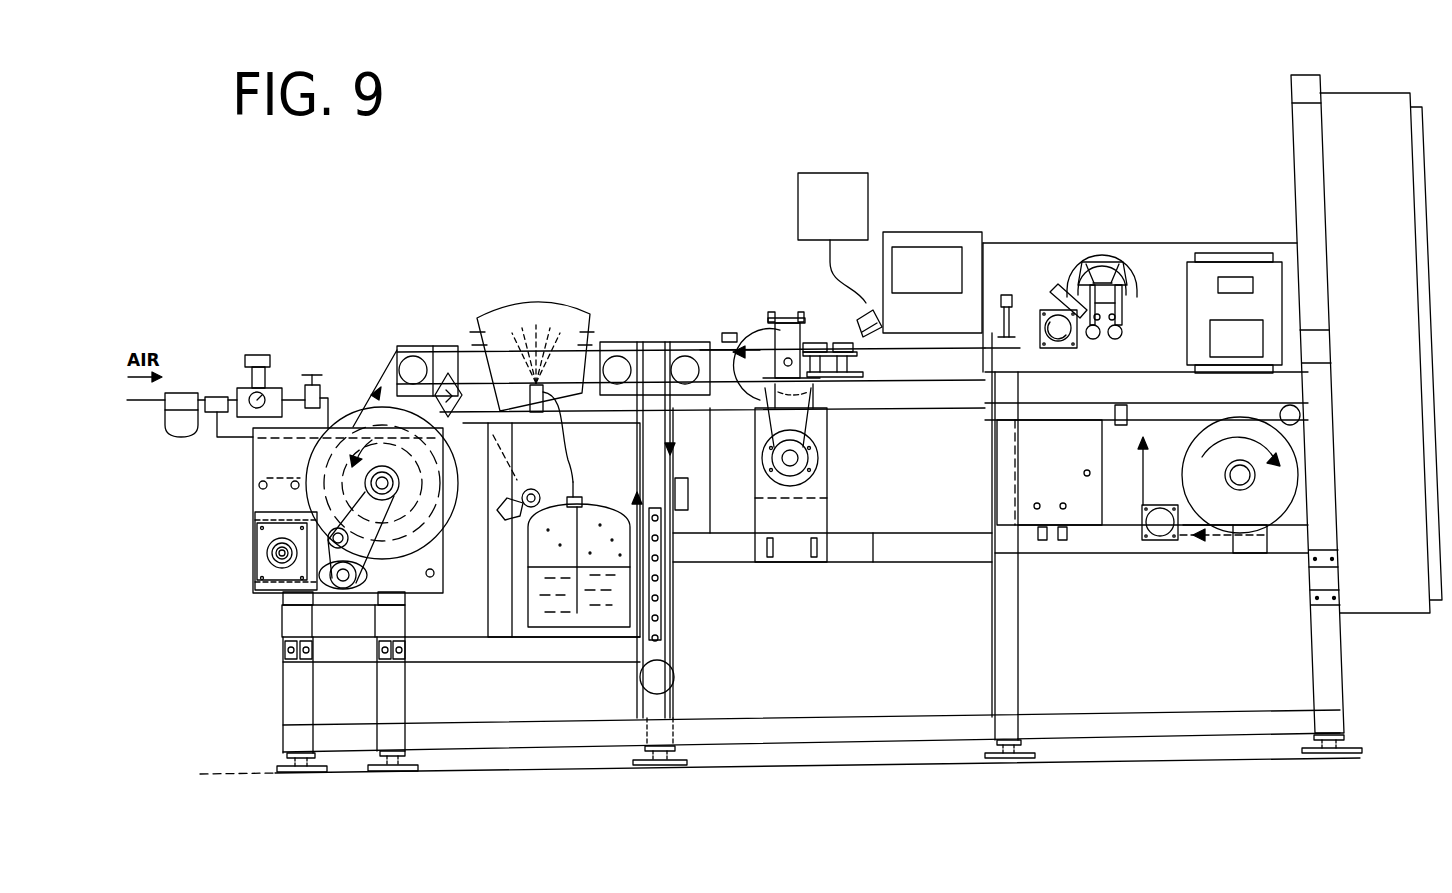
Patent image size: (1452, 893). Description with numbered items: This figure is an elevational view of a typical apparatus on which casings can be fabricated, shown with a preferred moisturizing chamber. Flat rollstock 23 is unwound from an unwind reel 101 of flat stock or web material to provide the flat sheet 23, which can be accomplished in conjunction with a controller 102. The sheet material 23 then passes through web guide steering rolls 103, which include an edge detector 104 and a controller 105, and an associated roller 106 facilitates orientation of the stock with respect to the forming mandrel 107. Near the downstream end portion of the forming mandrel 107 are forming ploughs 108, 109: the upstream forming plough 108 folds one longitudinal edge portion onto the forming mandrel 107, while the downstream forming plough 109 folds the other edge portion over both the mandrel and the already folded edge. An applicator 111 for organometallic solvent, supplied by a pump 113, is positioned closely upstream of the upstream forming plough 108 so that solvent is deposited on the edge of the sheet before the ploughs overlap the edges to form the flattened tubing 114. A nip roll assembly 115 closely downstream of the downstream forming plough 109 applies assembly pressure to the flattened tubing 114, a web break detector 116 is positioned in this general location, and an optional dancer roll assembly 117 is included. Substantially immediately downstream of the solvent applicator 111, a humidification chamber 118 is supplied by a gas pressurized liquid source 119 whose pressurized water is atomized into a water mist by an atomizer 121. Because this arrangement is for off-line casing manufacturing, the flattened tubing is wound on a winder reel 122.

The unwind reel 101 is at (1287, 503).
The controller 102 is at (1255, 318).
The web guide steering rolls 103 is at (1120, 256).
The edge detector 104 is at (1070, 285).
The controller 105 is at (1032, 478).
The associated roller 106 is at (1058, 335).
The forming mandrel 107 is at (937, 345).
The upstream forming plough 108 is at (852, 352).
The downstream forming plough 109 is at (822, 357).
The applicator 111 is at (858, 322).
The pump 113 is at (850, 216).
The flattened tubing 114 is at (720, 348).
The nip roll assembly 115 is at (773, 330).
The web break detector 116 is at (728, 333).
The dancer roll assembly 117 is at (667, 673).
The humidification chamber 118 is at (583, 305).
The gas pressurized liquid source 119 is at (558, 607).
The atomizer 121 is at (545, 395).
The winder reel 122 is at (450, 503).
The flat rollstock 23 is at (1142, 297).